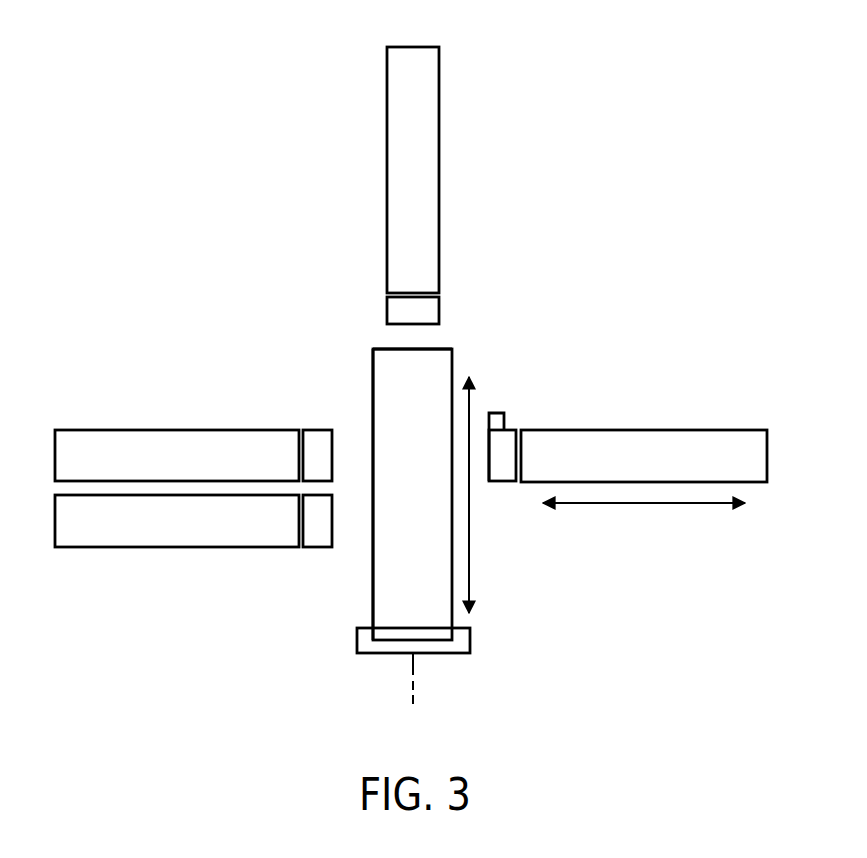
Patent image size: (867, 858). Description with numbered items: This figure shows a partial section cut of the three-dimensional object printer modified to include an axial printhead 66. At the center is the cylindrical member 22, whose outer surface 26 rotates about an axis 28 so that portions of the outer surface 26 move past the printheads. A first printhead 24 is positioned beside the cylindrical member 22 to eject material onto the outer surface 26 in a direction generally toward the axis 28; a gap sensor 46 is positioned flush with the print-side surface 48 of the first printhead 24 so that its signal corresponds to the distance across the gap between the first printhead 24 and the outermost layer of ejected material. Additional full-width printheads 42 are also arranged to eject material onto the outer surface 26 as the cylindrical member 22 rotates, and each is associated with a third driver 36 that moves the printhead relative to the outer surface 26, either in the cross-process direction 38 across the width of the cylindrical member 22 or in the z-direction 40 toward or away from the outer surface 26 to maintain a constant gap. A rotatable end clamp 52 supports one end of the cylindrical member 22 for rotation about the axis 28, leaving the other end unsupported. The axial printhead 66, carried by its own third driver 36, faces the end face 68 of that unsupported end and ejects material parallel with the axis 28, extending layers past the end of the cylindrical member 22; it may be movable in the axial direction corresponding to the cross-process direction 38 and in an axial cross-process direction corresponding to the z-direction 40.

The cylindrical member 22 is at (372, 376).
The first printhead 24 is at (502, 481).
The outer surface 26 is at (382, 592).
The axis 28 is at (420, 683).
The third driver 36 is at (387, 155).
The cross-process direction 38 is at (471, 582).
The z-direction 40 is at (645, 506).
The additional full-width printheads 42 is at (318, 430).
The gap sensor 46 is at (494, 418).
The print-side surface 48 is at (489, 460).
The rotatable end clamp 52 is at (464, 643).
The axial printhead 66 is at (387, 310).
The end face 68 is at (437, 348).